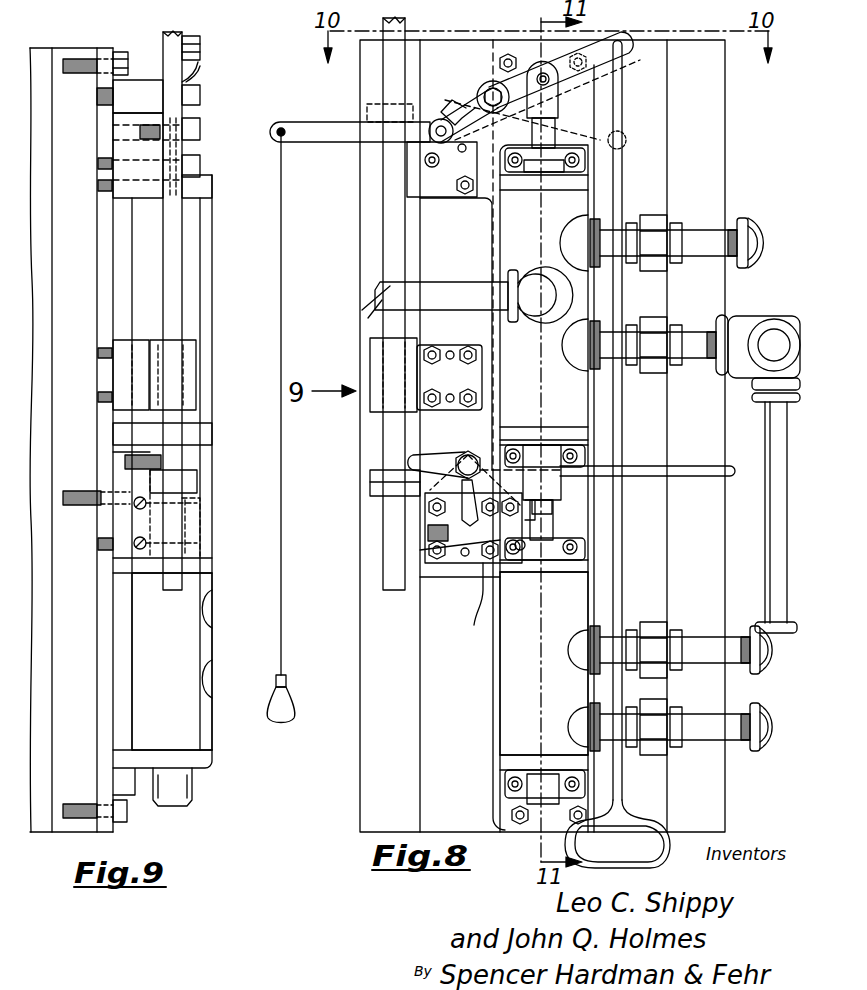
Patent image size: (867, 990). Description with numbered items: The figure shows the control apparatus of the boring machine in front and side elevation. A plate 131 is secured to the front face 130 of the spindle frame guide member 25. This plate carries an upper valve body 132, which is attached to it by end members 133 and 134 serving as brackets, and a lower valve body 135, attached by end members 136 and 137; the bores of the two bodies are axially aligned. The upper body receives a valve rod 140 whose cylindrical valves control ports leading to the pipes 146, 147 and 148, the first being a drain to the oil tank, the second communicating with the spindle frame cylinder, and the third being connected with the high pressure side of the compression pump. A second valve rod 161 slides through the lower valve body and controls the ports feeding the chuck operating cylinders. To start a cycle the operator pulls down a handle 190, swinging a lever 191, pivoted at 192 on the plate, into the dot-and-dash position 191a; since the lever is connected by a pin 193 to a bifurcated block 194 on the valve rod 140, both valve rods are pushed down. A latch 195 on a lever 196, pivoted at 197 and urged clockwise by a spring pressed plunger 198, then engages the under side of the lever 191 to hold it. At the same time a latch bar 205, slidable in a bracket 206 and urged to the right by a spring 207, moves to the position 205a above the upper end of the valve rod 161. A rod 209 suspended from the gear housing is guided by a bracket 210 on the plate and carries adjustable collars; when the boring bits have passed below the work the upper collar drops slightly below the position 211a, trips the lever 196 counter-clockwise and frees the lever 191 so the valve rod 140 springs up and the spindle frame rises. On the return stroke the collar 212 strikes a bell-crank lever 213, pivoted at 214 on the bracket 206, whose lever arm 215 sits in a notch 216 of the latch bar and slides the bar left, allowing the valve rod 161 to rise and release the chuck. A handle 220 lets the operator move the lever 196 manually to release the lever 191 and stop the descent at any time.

In FIG. 9, the spindle frame guide member 25 is at (57, 58).
In FIG. 8, the spindle frame guide member 25 is at (368, 664).
In FIG. 9, the front face 130 is at (99, 184).
In FIG. 9, the plate 131 is at (106, 300).
In FIG. 8, the plate 131 is at (442, 768).
In FIG. 9, the valve body 132 is at (205, 250).
In FIG. 8, the valve body 132 is at (520, 240).
In FIG. 9, the end member 133 is at (203, 183).
In FIG. 8, the end member 133 is at (568, 180).
In FIG. 9, the end member 134 is at (204, 437).
In FIG. 8, the end member 134 is at (556, 436).
In FIG. 9, the valve body 135 is at (206, 652).
In FIG. 8, the valve body 135 is at (514, 700).
In FIG. 9, the end member 136 is at (206, 566).
In FIG. 8, the end member 136 is at (570, 572).
In FIG. 9, the end member 137 is at (206, 758).
In FIG. 8, the end member 137 is at (516, 754).
In FIG. 8, the valve rod 140 is at (540, 150).
In FIG. 8, the pipe 146 is at (754, 232).
In FIG. 8, the pipe 147 is at (380, 300).
In FIG. 8, the pipe 148 is at (704, 358).
In FIG. 8, the valve rod 161 is at (556, 532).
In FIG. 8, the handle 190 is at (650, 824).
In FIG. 8, the lever 191 is at (632, 42).
In FIG. 8, the lever position 191a is at (628, 138).
In FIG. 8, the pivot 192 is at (490, 92).
In FIG. 8, the pin 193 is at (560, 66).
In FIG. 8, the bifurcated block 194 is at (622, 94).
In FIG. 8, the latch 195 is at (438, 114).
In FIG. 8, the lever 196 is at (332, 140).
In FIG. 8, the pivot 197 is at (430, 142).
In FIG. 8, the spring pressed plunger 198 is at (415, 162).
In FIG. 8, the latch bar 205 is at (456, 570).
In FIG. 8, the latch bar position 205a is at (575, 516).
In FIG. 8, the bracket 206 is at (476, 612).
In FIG. 8, the spring 207 is at (440, 533).
In FIG. 9, the rod 209 is at (172, 236).
In FIG. 9, the bracket 210 is at (198, 382).
In FIG. 8, the bracket 210 is at (363, 361).
In FIG. 8, the collar position 211a is at (367, 112).
In FIG. 9, the collar 212 is at (199, 488).
In FIG. 8, the collar 212 is at (380, 472).
In FIG. 8, the bell-crank lever 213 is at (428, 458).
In FIG. 8, the pivot 214 is at (466, 456).
In FIG. 8, the lever arm 215 is at (372, 492).
In FIG. 8, the notch 216 is at (450, 538).
In FIG. 8, the handle 220 is at (296, 714).